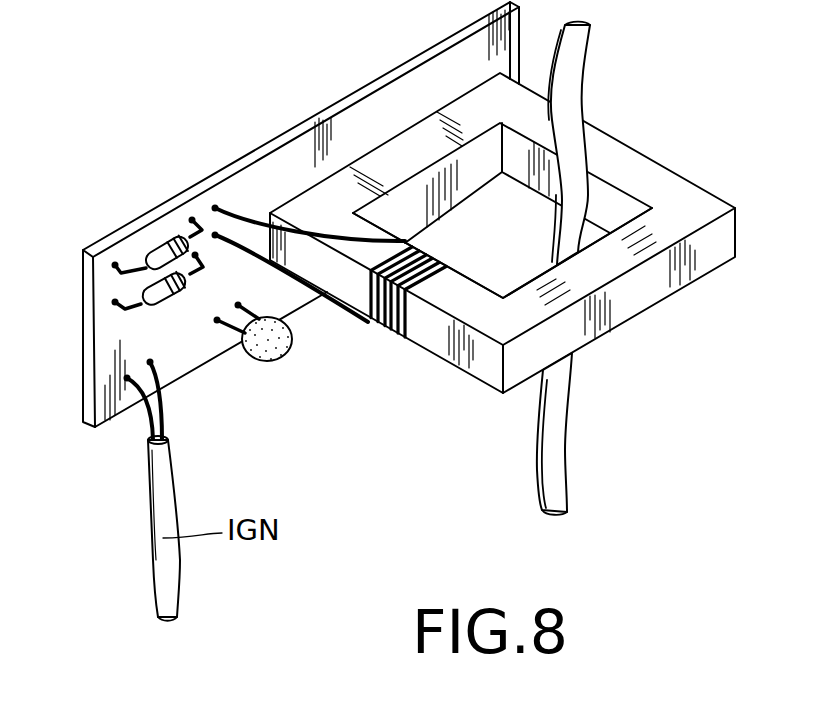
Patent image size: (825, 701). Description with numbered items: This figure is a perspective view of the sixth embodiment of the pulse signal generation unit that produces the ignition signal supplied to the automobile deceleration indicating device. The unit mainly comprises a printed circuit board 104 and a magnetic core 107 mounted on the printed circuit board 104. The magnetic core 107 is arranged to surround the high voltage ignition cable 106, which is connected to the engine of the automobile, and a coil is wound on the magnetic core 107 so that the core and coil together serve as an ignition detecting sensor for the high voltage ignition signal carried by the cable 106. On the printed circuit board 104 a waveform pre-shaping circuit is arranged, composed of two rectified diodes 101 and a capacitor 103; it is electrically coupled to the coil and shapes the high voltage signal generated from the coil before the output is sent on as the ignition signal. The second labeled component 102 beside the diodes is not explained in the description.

The rectified diode 101 is at (160, 252).
The second resistor 102 is at (172, 294).
The capacitor 103 is at (291, 352).
The printed circuit board 104 is at (300, 128).
The high voltage ignition cable 106 is at (577, 62).
The magnetic core 107 is at (677, 190).